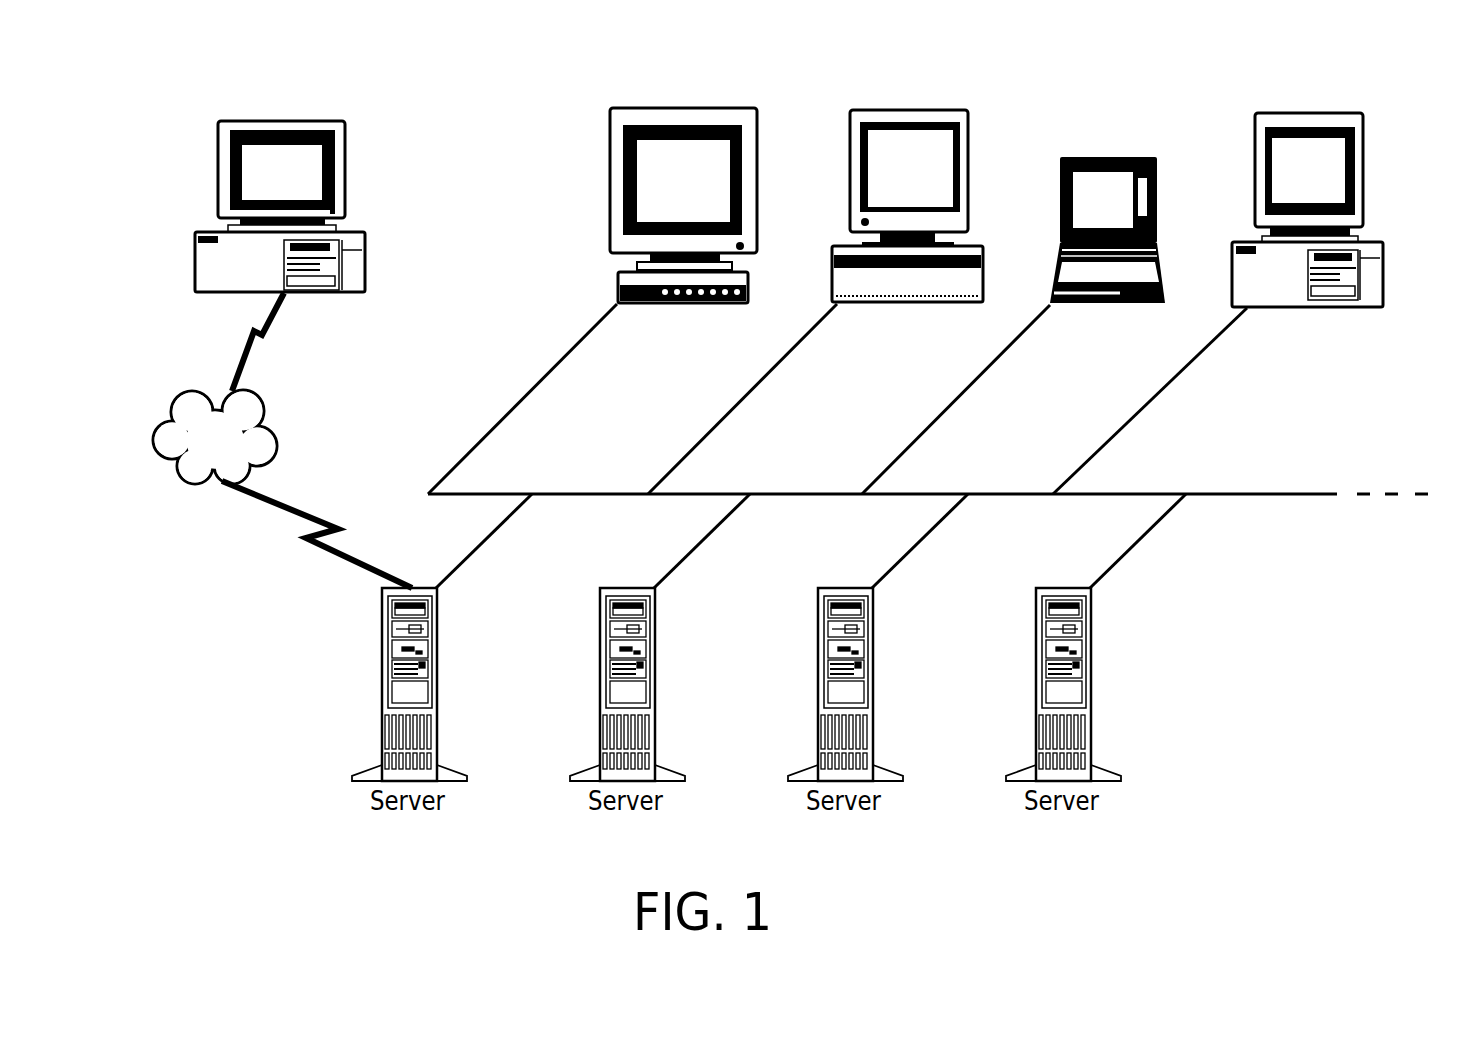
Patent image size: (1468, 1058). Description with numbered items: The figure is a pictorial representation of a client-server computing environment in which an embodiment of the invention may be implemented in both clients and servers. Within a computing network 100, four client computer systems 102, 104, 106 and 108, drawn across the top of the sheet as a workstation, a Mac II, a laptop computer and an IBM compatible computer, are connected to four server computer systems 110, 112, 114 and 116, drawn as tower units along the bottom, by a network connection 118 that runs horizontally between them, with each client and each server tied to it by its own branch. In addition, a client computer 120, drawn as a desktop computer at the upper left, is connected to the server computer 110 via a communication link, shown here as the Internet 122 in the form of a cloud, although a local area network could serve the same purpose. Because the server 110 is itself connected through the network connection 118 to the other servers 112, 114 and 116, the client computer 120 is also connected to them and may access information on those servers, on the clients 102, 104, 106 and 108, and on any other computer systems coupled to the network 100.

The computing network 100 is at (1270, 658).
The client computer system 102 is at (683, 106).
The client computer system 104 is at (905, 108).
The client computer system 106 is at (1107, 157).
The client computer system 108 is at (1308, 113).
The server computer system 110 is at (437, 682).
The server computer system 112 is at (655, 682).
The server computer system 114 is at (873, 682).
The server computer system 116 is at (1091, 684).
The network connection 118 is at (990, 495).
The client computer 120 is at (290, 118).
The Internet 122 is at (275, 436).